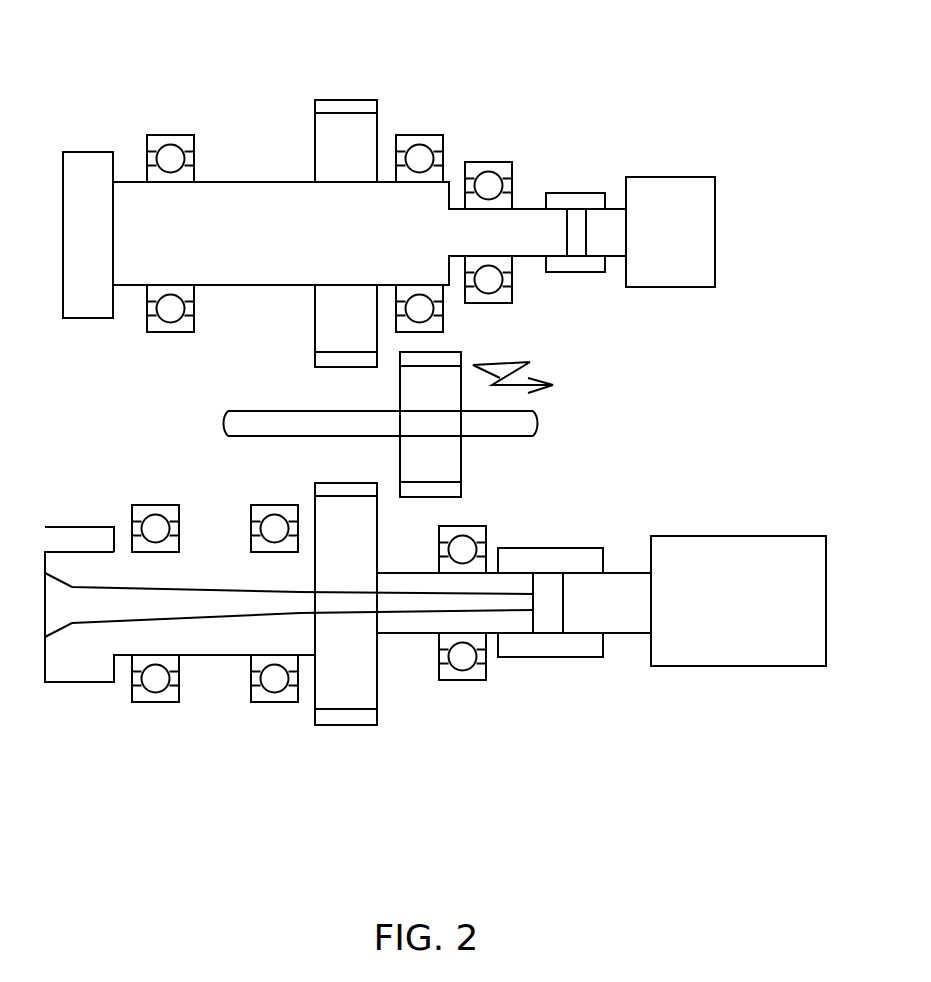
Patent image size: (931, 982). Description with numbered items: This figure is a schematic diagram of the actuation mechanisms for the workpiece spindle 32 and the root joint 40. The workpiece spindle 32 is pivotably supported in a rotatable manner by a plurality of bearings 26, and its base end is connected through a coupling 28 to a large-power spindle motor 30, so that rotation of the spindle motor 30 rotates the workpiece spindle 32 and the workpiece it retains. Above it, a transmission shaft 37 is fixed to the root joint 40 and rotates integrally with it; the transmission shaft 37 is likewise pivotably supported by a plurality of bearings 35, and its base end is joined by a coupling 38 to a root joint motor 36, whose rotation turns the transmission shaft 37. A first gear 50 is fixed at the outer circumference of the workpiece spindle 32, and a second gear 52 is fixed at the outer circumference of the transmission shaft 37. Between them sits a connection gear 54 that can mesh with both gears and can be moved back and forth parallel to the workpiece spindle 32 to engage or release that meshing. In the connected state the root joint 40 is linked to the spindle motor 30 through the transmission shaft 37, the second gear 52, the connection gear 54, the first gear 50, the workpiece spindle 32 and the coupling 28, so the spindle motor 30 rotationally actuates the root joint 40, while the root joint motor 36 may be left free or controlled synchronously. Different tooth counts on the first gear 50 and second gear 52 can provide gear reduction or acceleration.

The bearings 26 is at (170, 697).
The coupling 28 is at (550, 650).
The spindle motor 30 is at (740, 653).
The workpiece spindle 32 is at (85, 670).
The bearings 35 is at (167, 137).
The root joint motor 36 is at (668, 183).
The transmission shaft 37 is at (245, 195).
The coupling 38 is at (566, 200).
The root joint 40 is at (78, 157).
The first gear 50 is at (345, 718).
The second gear 52 is at (349, 107).
The connection gear 54 is at (461, 473).